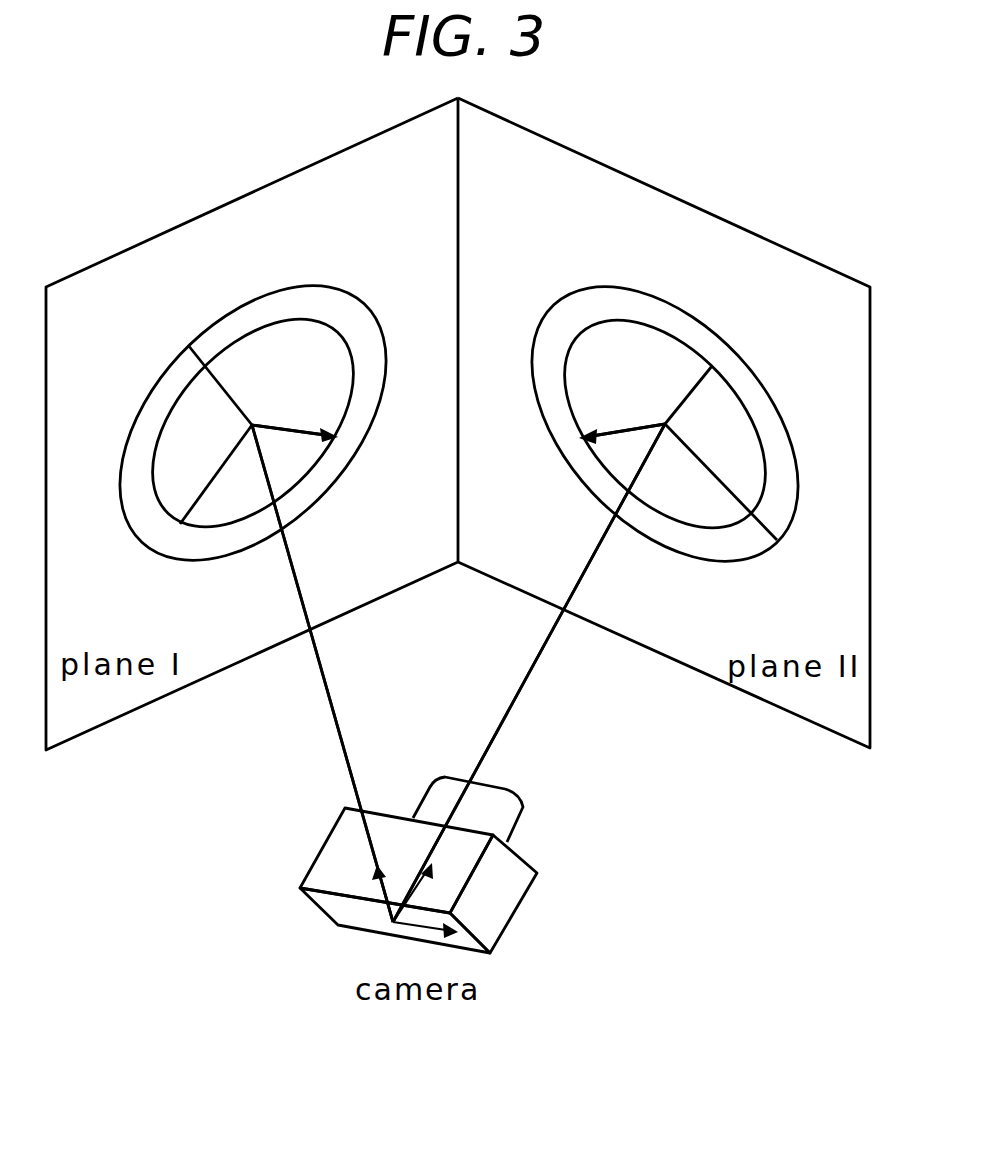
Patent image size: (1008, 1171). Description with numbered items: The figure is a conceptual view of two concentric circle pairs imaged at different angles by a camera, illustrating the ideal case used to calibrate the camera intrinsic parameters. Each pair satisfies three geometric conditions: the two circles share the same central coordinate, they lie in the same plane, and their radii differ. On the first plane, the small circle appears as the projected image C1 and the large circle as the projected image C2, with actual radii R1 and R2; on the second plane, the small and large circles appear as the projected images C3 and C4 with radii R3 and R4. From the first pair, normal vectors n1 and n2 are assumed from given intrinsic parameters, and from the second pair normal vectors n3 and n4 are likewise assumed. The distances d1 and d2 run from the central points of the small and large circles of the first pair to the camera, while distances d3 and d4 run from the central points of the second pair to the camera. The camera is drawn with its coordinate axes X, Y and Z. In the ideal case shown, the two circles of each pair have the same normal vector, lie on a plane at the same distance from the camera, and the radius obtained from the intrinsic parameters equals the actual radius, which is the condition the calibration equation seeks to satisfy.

The projected image of small circle C1 is at (252, 423).
The projected image of large circle C2 is at (253, 423).
The projected image of small circle C3 is at (664, 424).
The projected image of large circle C4 is at (665, 424).
The radius of the circle R1 is at (216, 474).
The radius of the circle R2 is at (220, 378).
The radius of the circle R3 is at (682, 395).
The radius of the circle R4 is at (729, 482).
The normal vector n1 is at (308, 428).
The normal vector n2 is at (298, 448).
The normal vector n3 is at (606, 423).
The normal vector n4 is at (618, 445).
The distance d1 is at (322, 673).
The distance d2 is at (322, 673).
The distance d3 is at (529, 673).
The distance d4 is at (529, 673).
The camera X axis X is at (432, 940).
The camera Y axis Y is at (369, 890).
The camera Z axis Z is at (424, 891).